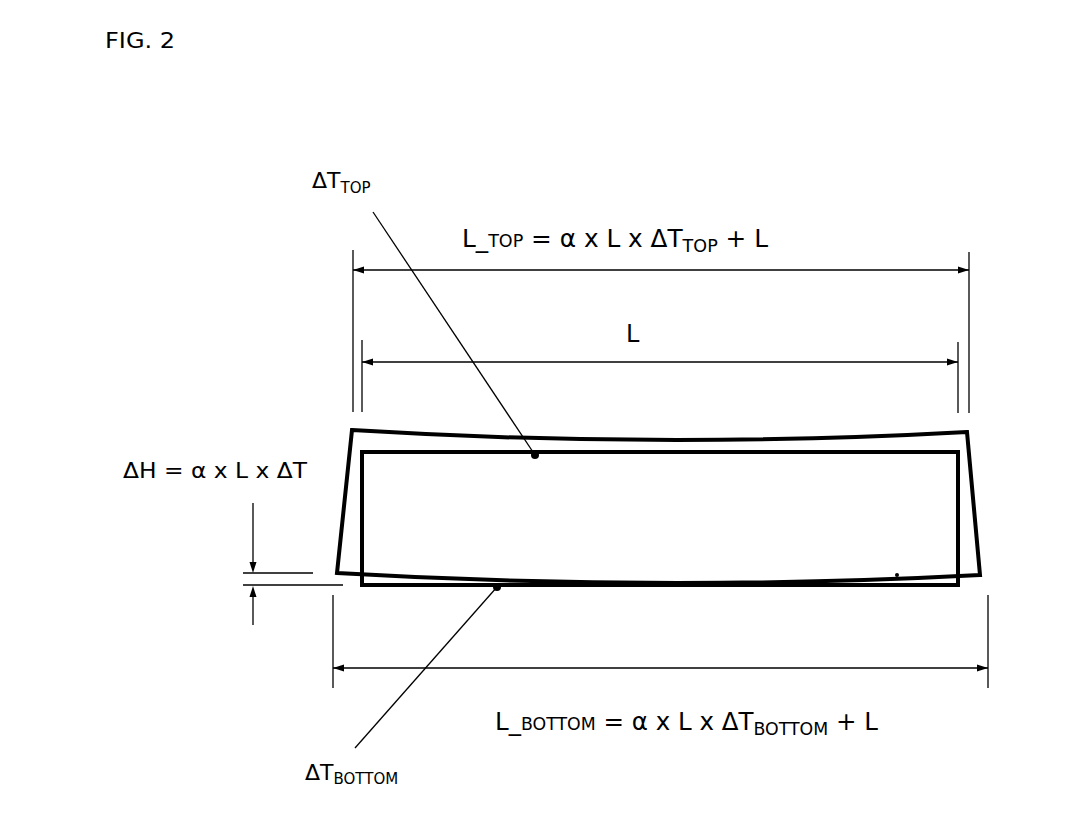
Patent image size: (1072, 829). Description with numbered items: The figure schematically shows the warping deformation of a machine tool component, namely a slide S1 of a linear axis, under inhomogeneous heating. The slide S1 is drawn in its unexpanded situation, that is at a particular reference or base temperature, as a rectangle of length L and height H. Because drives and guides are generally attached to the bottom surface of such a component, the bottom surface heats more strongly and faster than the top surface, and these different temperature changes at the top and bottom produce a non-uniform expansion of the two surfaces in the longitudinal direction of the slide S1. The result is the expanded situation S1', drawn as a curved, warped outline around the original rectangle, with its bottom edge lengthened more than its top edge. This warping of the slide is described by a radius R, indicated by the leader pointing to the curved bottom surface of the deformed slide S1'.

The slide S1 is at (702, 518).
The slide in expanded situation S1' is at (698, 506).
The radius R is at (895, 566).